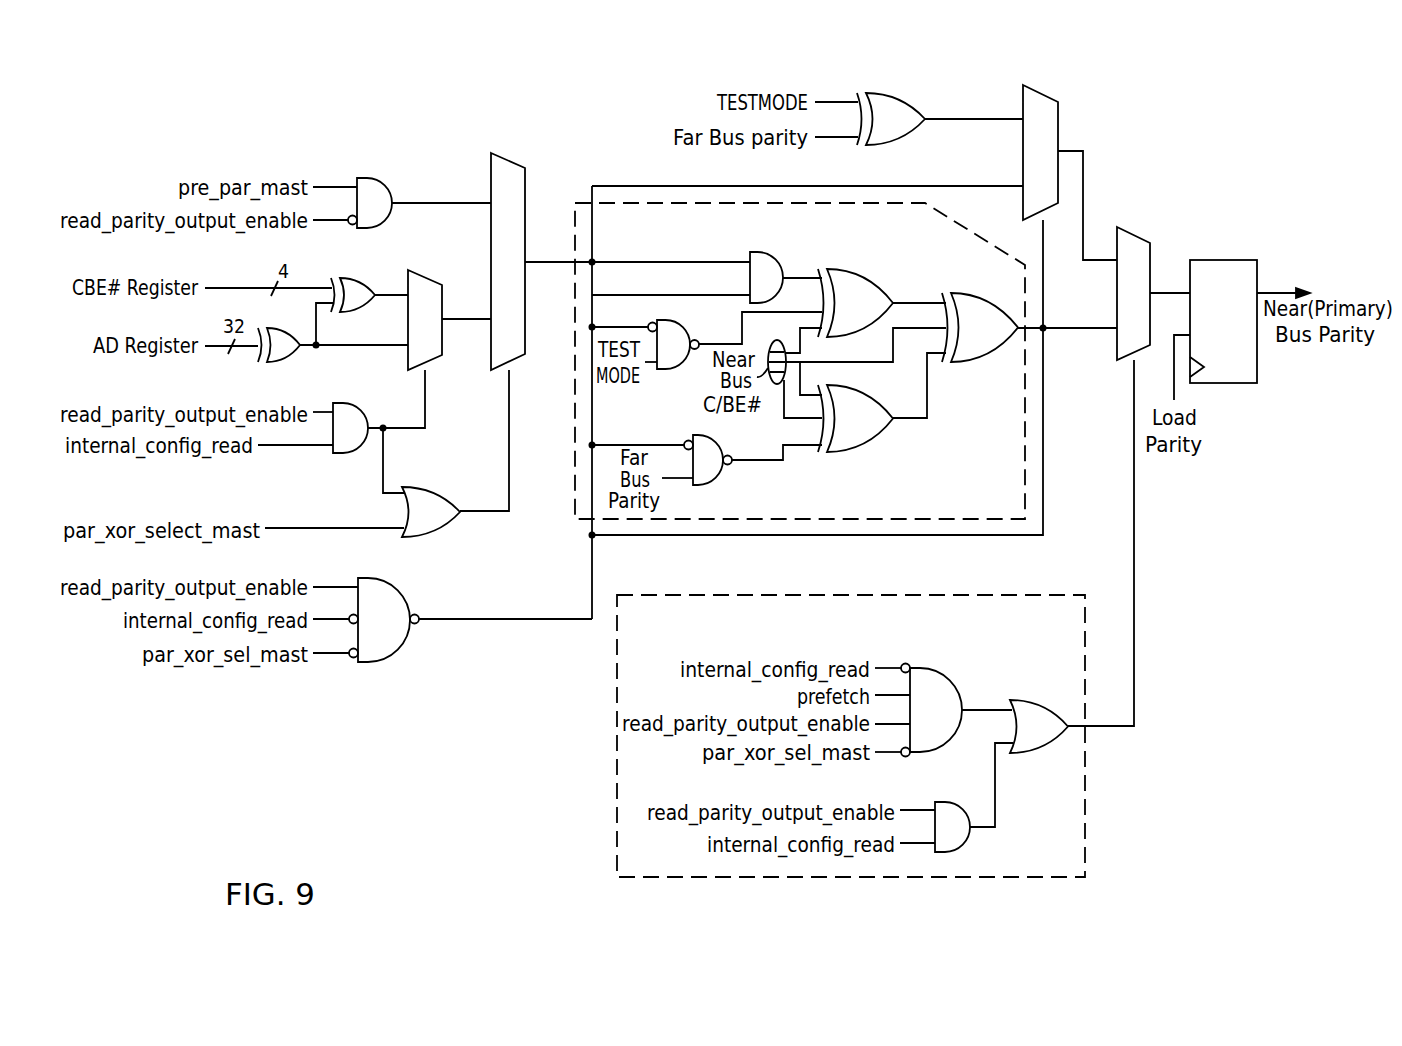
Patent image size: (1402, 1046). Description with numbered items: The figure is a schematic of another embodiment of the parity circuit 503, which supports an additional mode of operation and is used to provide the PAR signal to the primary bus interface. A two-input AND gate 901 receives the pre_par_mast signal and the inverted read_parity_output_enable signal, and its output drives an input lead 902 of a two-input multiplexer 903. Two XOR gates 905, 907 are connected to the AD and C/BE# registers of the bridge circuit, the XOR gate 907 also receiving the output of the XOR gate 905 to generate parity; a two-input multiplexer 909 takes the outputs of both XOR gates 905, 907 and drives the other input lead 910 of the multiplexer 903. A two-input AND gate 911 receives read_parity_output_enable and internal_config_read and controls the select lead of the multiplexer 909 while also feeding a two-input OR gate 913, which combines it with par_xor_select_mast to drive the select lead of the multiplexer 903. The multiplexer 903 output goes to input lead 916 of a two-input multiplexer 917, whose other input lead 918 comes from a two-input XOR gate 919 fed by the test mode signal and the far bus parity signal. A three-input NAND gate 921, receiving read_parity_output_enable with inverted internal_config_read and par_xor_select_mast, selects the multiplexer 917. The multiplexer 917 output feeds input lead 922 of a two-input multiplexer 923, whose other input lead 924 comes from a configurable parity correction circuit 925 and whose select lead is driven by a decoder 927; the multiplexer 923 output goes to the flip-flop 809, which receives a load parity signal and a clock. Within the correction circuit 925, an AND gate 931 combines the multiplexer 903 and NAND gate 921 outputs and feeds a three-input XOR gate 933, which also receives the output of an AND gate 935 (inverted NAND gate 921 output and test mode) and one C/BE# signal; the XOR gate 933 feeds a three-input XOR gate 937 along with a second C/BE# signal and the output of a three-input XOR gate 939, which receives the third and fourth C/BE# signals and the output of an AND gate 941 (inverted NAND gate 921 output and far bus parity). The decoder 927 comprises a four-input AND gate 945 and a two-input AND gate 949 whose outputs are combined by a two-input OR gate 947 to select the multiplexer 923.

The parity circuit 503 is at (497, 76).
The flip-flop 809 is at (1236, 260).
The two-input AND gate 901 is at (373, 178).
The input lead of multiplexer 903 902 is at (442, 203).
The two-input multiplexer 903 is at (512, 162).
The XOR gate 905 is at (288, 328).
The XOR gate 907 is at (356, 278).
The two-input multiplexer 909 is at (426, 278).
The input lead of multiplexer 903 910 is at (468, 319).
The two-input AND gate 911 is at (348, 403).
The two-input OR gate 913 is at (425, 487).
The input lead of multiplexer 917 916 is at (985, 186).
The two-input multiplexer 917 is at (1041, 94).
The input lead of multiplexer 917 918 is at (975, 119).
The two-input XOR gate 919 is at (895, 93).
The three-input NAND gate 921 is at (372, 578).
The input lead of multiplexer 923 922 is at (1094, 262).
The two-input multiplexer 923 is at (1134, 233).
The input lead of multiplexer 923 924 is at (1075, 328).
The configurable parity correction circuit 925 is at (575, 500).
The decoder 927 is at (1050, 595).
The two-input AND gate 931 is at (763, 252).
The three-input XOR gate 933 is at (838, 269).
The two-input AND gate 935 is at (688, 326).
The three-input XOR gate 937 is at (978, 293).
The three-input XOR gate 939 is at (872, 452).
The two-input AND gate 941 is at (726, 482).
The four-input AND gate 945 is at (923, 668).
The two-input OR gate 947 is at (1030, 700).
The two-input AND gate 949 is at (948, 802).